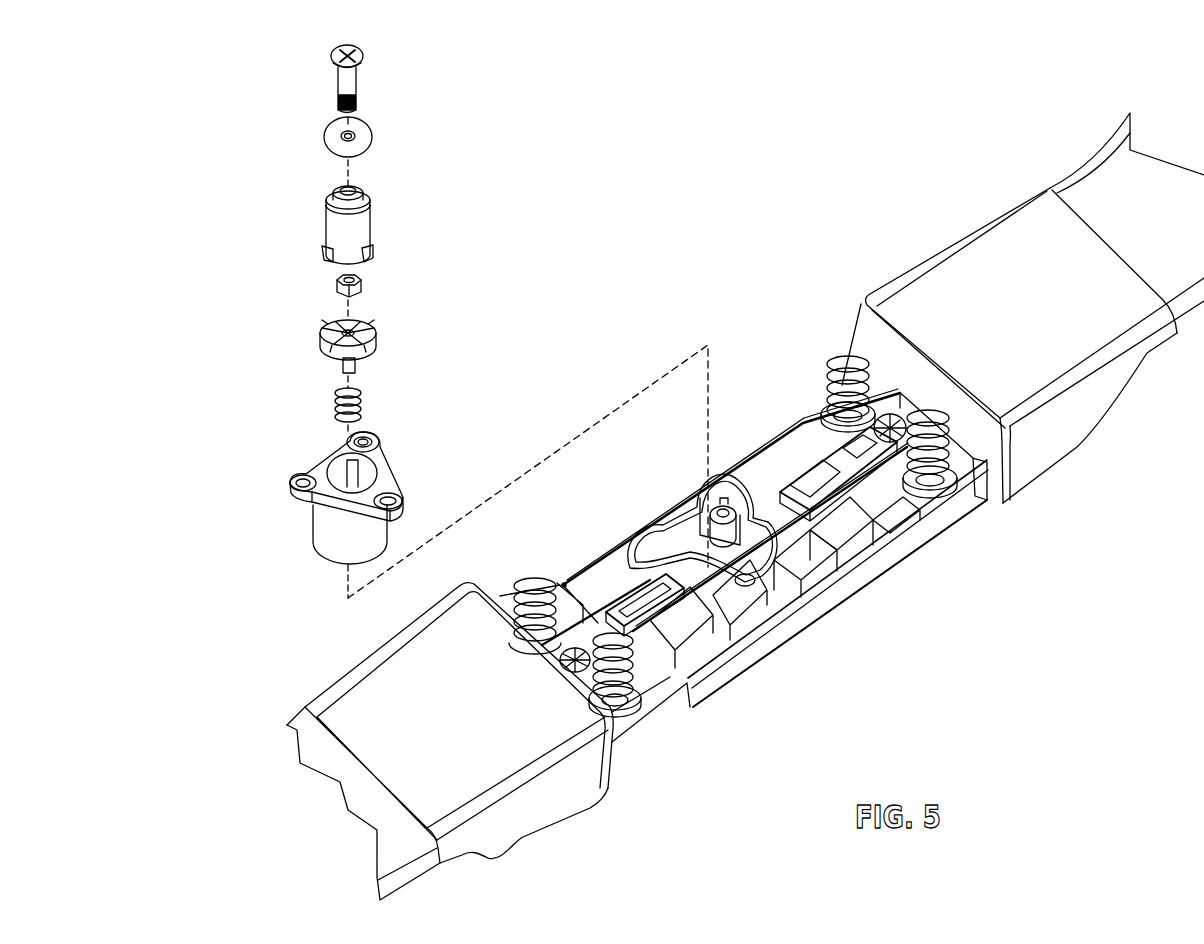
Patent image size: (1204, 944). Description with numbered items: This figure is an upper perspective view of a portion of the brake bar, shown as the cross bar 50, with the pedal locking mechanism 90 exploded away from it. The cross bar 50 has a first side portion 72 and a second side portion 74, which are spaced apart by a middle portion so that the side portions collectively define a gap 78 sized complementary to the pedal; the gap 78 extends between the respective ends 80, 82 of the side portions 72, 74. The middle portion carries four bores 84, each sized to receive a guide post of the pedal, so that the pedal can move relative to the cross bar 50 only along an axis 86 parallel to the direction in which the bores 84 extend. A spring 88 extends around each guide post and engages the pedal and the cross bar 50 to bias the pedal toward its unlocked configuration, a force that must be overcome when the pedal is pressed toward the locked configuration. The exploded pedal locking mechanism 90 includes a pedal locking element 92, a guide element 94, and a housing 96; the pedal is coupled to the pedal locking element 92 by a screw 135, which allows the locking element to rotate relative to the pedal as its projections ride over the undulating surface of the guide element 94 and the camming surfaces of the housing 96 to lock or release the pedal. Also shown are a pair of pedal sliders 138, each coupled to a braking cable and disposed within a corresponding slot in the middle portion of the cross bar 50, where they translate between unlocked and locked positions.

The cross bar 50 is at (450, 741).
The first side portion 72 is at (325, 692).
The second side portion 74 is at (1050, 365).
The gap 78 is at (614, 520).
The end of first side portion 80 is at (494, 602).
The end of second side portion 82 is at (870, 330).
The bore 84 is at (630, 713).
The axis 86 is at (705, 393).
The spring 88 is at (534, 585).
The pedal locking mechanism 90 is at (288, 52).
The pedal locking element 92 is at (364, 221).
The guide element 94 is at (392, 325).
The housing 96 is at (400, 454).
The screw 135 is at (353, 82).
The pedal slider 138 is at (626, 603).